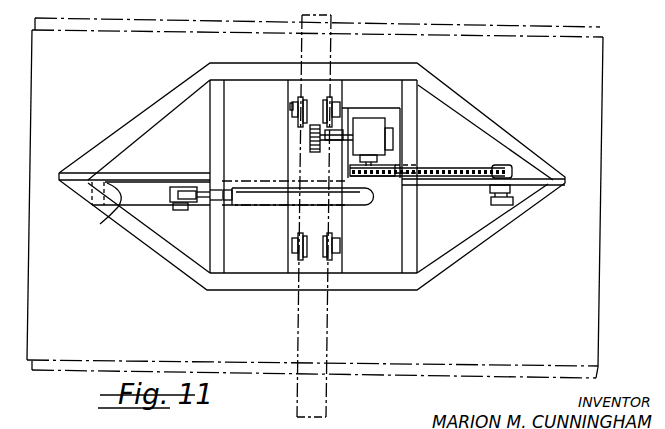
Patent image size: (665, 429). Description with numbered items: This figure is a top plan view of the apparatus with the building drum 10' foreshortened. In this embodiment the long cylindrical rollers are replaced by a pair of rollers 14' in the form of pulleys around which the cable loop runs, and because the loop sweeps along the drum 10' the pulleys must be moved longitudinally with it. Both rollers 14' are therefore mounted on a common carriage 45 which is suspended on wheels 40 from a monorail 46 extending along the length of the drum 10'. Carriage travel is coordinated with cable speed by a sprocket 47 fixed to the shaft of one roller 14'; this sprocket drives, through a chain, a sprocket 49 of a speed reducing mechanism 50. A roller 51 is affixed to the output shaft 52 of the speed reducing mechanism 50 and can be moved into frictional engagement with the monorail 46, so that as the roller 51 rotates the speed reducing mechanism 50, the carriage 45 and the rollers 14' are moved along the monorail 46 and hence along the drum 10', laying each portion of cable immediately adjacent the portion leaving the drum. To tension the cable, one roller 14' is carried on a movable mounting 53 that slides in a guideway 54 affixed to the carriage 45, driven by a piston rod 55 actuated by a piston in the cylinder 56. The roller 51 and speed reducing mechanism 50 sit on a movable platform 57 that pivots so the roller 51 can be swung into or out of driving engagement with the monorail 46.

The drum 10' is at (339, 198).
The rollers 14' is at (478, 210).
The wheels 40 is at (326, 97).
The carriage 45 is at (479, 109).
The monorail 46 is at (333, 16).
The sprocket 47 is at (503, 165).
The sprocket 49 is at (381, 178).
The speed reducing mechanism 50 is at (360, 120).
The roller 51 is at (310, 134).
The output shaft 52 is at (319, 150).
The movable mounting 53 is at (186, 186).
The guideway 54 is at (103, 225).
The piston rod 55 is at (226, 216).
The cylinder 56 is at (281, 206).
The movable platform 57 is at (346, 116).